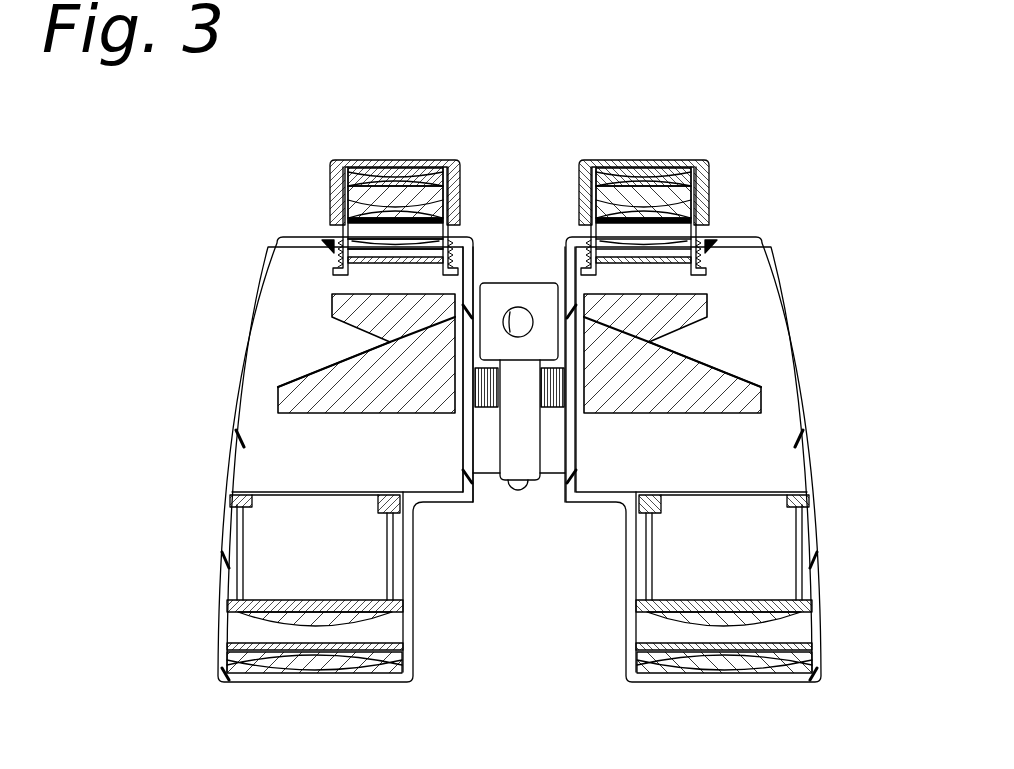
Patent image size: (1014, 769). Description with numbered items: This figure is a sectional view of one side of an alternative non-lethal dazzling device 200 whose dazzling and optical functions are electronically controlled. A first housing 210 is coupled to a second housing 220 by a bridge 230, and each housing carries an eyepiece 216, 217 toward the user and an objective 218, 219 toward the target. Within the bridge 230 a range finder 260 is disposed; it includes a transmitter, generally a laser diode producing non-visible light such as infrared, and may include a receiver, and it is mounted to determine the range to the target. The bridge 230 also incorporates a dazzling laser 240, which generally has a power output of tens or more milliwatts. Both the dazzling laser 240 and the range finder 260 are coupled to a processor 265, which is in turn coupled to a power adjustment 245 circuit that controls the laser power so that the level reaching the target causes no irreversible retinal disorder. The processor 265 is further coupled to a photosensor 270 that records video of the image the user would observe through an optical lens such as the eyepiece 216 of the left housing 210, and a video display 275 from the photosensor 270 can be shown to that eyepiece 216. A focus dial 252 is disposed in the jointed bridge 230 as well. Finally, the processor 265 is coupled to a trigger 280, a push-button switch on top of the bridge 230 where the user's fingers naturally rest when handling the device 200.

The non-lethal dazzling device 200 is at (224, 168).
The first housing 210 is at (222, 500).
The second housing 220 is at (802, 410).
The eyepiece 216 is at (350, 160).
The eyepiece 217 is at (657, 158).
The objective 218 is at (342, 665).
The objective 219 is at (750, 670).
The bridge 230 is at (562, 338).
The dazzling laser 240 is at (508, 435).
The power adjustment circuit 245 is at (537, 347).
The focus dial 252 is at (476, 386).
The range finder 260 is at (521, 487).
The processor 265 is at (540, 276).
The photosensor 270 is at (495, 297).
The video display 275 is at (367, 240).
The trigger 280 is at (518, 322).